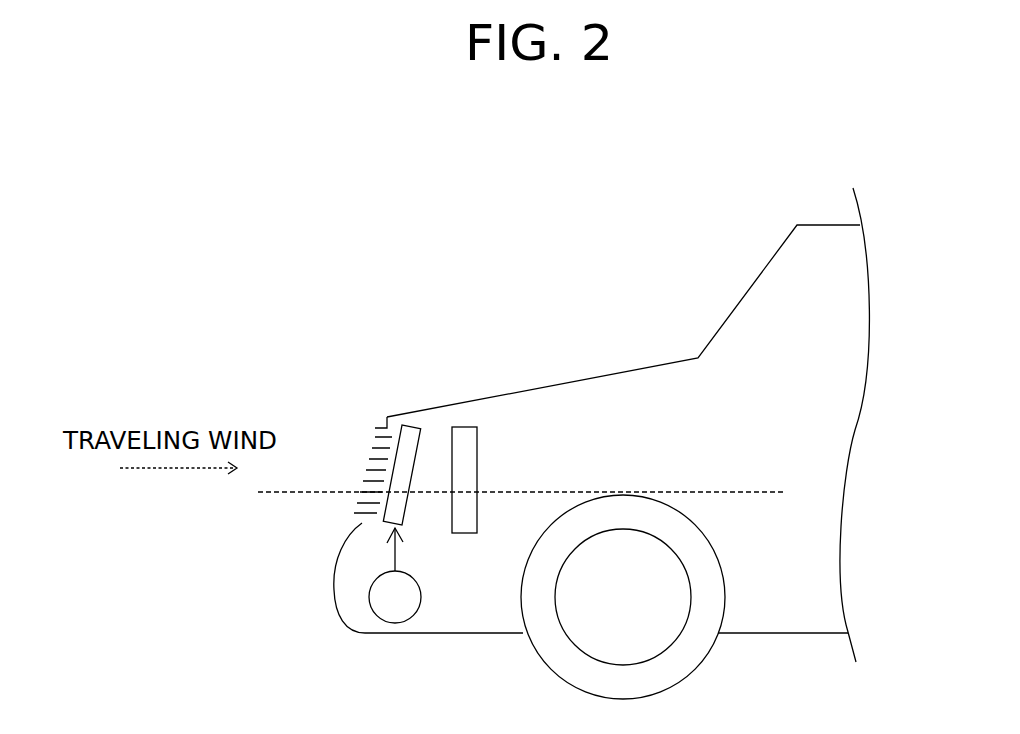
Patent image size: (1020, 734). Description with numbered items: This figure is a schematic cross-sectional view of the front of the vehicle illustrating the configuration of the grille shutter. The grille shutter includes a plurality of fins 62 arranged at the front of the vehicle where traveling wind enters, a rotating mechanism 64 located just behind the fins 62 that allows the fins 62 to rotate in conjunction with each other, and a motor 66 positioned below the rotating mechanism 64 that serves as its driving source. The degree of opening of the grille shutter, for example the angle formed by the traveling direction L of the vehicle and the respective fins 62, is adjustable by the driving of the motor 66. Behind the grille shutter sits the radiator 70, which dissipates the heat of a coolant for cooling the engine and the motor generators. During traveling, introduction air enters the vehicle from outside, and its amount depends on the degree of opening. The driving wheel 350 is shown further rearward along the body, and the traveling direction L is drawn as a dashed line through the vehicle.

The fins 62 is at (350, 398).
The rotating mechanism 64 is at (417, 425).
The motor 66 is at (394, 623).
The radiator 70 is at (462, 427).
The driving wheel 350 is at (706, 664).
The traveling direction L is at (734, 489).